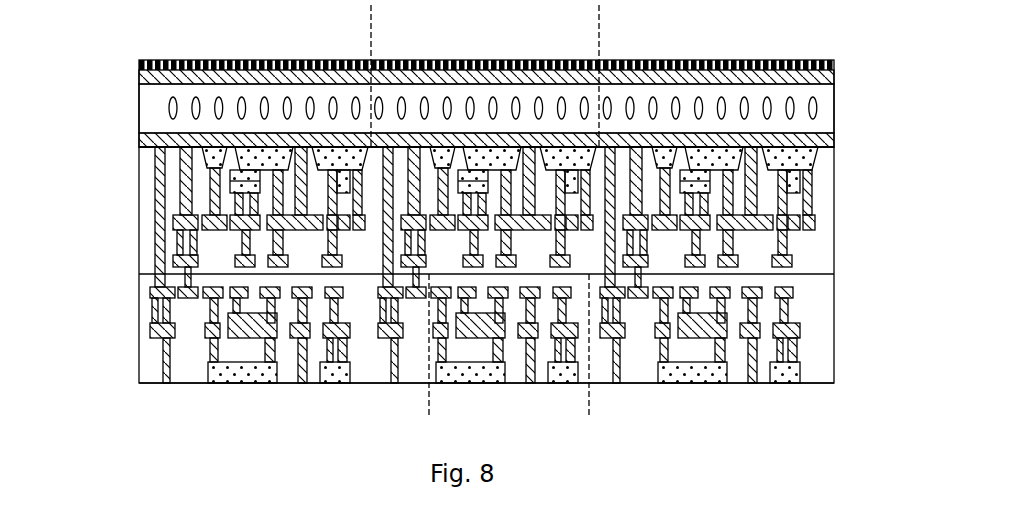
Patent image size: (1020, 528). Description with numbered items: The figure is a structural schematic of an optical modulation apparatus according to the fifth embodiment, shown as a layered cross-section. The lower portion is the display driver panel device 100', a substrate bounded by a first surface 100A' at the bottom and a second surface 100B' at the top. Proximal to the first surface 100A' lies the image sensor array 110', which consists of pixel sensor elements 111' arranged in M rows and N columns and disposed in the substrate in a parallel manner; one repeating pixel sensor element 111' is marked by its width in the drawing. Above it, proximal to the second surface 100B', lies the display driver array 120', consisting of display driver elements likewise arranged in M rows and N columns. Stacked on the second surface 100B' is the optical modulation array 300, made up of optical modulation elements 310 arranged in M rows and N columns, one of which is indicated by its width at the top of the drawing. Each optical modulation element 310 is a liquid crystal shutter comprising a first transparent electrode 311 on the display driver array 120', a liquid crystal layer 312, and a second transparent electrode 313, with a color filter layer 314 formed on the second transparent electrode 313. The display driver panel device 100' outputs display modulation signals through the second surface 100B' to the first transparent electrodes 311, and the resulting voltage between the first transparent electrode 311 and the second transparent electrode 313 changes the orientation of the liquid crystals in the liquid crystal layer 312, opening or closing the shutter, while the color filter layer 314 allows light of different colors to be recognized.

The display driver panel device 100' is at (419, 265).
The first surface 100A' is at (476, 414).
The second surface 100B' is at (469, 77).
The image sensor array 110' is at (439, 328).
The pixel sensor element 111' is at (509, 346).
The display driver array 120' is at (449, 217).
The optical modulation array 300 is at (138, 60).
The optical modulation element 310 is at (599, 33).
The first transparent electrode 311 is at (832, 143).
The liquid crystal layer 312 is at (828, 110).
The second transparent electrode 313 is at (832, 80).
The color filter layer 314 is at (834, 66).